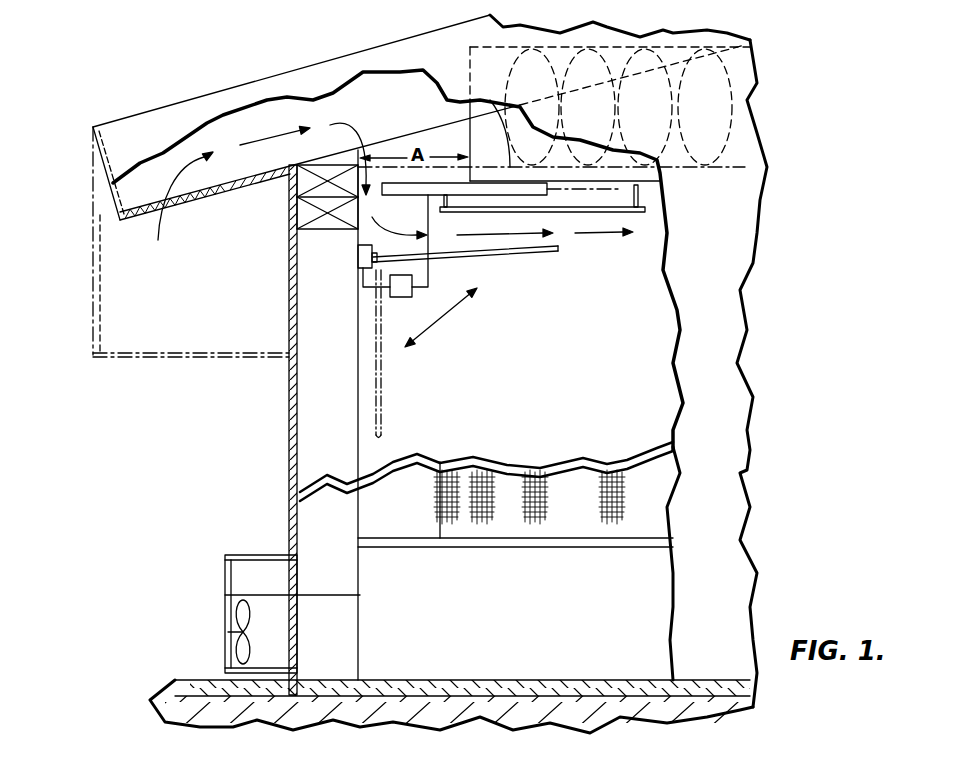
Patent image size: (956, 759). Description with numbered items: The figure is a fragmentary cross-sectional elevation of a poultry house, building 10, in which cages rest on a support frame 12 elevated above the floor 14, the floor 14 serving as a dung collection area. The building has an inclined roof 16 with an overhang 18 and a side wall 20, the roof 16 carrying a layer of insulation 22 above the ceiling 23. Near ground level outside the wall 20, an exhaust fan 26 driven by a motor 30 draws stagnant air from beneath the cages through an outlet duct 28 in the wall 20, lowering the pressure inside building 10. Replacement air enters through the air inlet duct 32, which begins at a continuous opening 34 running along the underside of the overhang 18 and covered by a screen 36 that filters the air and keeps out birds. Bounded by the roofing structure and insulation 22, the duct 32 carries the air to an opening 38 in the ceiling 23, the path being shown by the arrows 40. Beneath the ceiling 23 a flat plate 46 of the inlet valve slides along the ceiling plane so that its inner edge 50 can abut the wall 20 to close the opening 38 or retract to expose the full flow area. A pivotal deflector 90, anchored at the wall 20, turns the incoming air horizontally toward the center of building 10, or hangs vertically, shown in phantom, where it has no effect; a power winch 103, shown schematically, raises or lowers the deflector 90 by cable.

The building 10 is at (778, 286).
The support frame 12 is at (653, 542).
The floor 14 is at (657, 692).
The roof 16 is at (380, 58).
The overhang 18 is at (162, 120).
The wall 20 is at (303, 402).
The insulation 22 is at (740, 100).
The ceiling 23 is at (640, 170).
The exhaust fan 26 is at (227, 607).
The outlet duct 28 is at (330, 597).
The motor 30 is at (248, 555).
The air inlet duct 32 is at (258, 128).
The continuous opening 34 is at (147, 207).
The screen 36 is at (207, 193).
The opening 38 is at (466, 172).
The arrows 40 is at (347, 120).
The flat plate 46 is at (490, 190).
The inner edge 50 is at (380, 183).
The deflector 90 is at (507, 255).
The power winch 103 is at (402, 297).